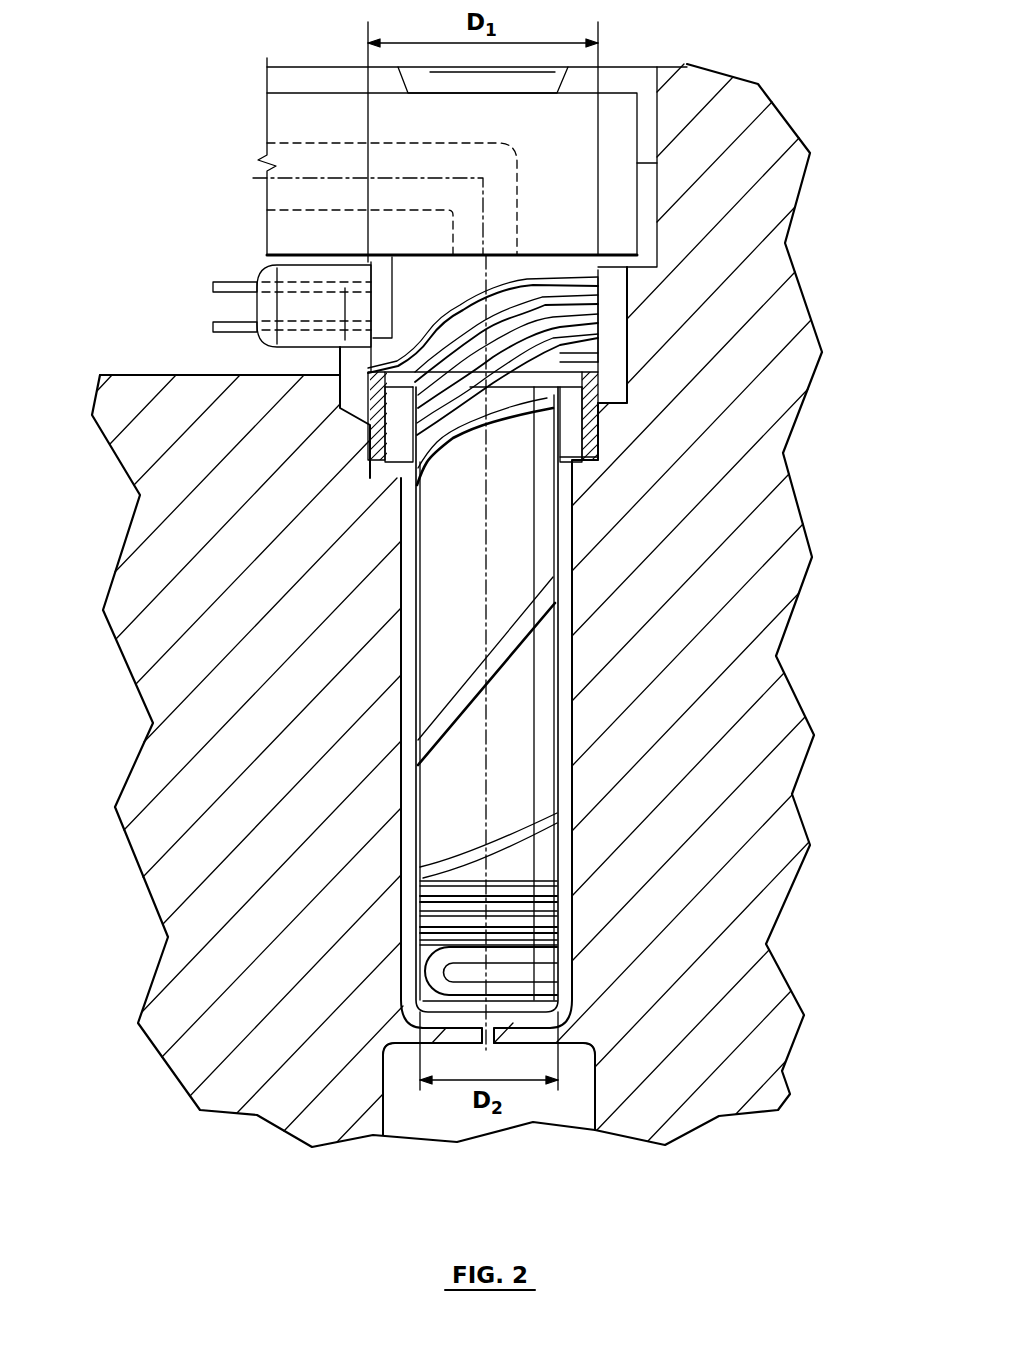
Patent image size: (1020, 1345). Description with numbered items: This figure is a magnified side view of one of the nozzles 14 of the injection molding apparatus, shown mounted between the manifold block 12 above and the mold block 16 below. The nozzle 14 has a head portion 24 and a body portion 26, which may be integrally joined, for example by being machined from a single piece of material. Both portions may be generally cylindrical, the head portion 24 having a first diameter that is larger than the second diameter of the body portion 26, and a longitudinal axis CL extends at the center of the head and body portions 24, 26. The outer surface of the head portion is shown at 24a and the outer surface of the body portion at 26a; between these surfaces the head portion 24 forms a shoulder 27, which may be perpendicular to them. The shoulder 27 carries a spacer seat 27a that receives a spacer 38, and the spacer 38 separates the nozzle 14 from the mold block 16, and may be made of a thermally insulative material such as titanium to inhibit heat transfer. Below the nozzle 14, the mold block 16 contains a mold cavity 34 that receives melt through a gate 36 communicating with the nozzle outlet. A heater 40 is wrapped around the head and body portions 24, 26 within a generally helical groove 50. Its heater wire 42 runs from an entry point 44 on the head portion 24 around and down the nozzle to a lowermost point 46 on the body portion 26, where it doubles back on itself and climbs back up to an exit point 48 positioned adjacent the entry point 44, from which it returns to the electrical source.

The manifold block 12 is at (657, 163).
The nozzle 14 is at (600, 303).
The mold block 16 is at (674, 718).
The head portion 24 is at (325, 344).
The outer surface of the head portion 24a is at (600, 274).
The body portion 26 is at (423, 508).
The outer surface of the body portion 26a is at (558, 530).
The shoulder 27 is at (603, 410).
The spacer seat 27a is at (600, 387).
The mold cavity 34 is at (408, 1082).
The gate 36 is at (493, 1030).
The spacer 38 is at (590, 423).
The heater 40 is at (297, 328).
The heater wire 42 is at (545, 603).
The entry point 44 is at (345, 288).
The lowermost point 46 is at (435, 973).
The exit point 48 is at (368, 340).
The groove 50 is at (600, 342).
The longitudinal axis CL is at (485, 943).